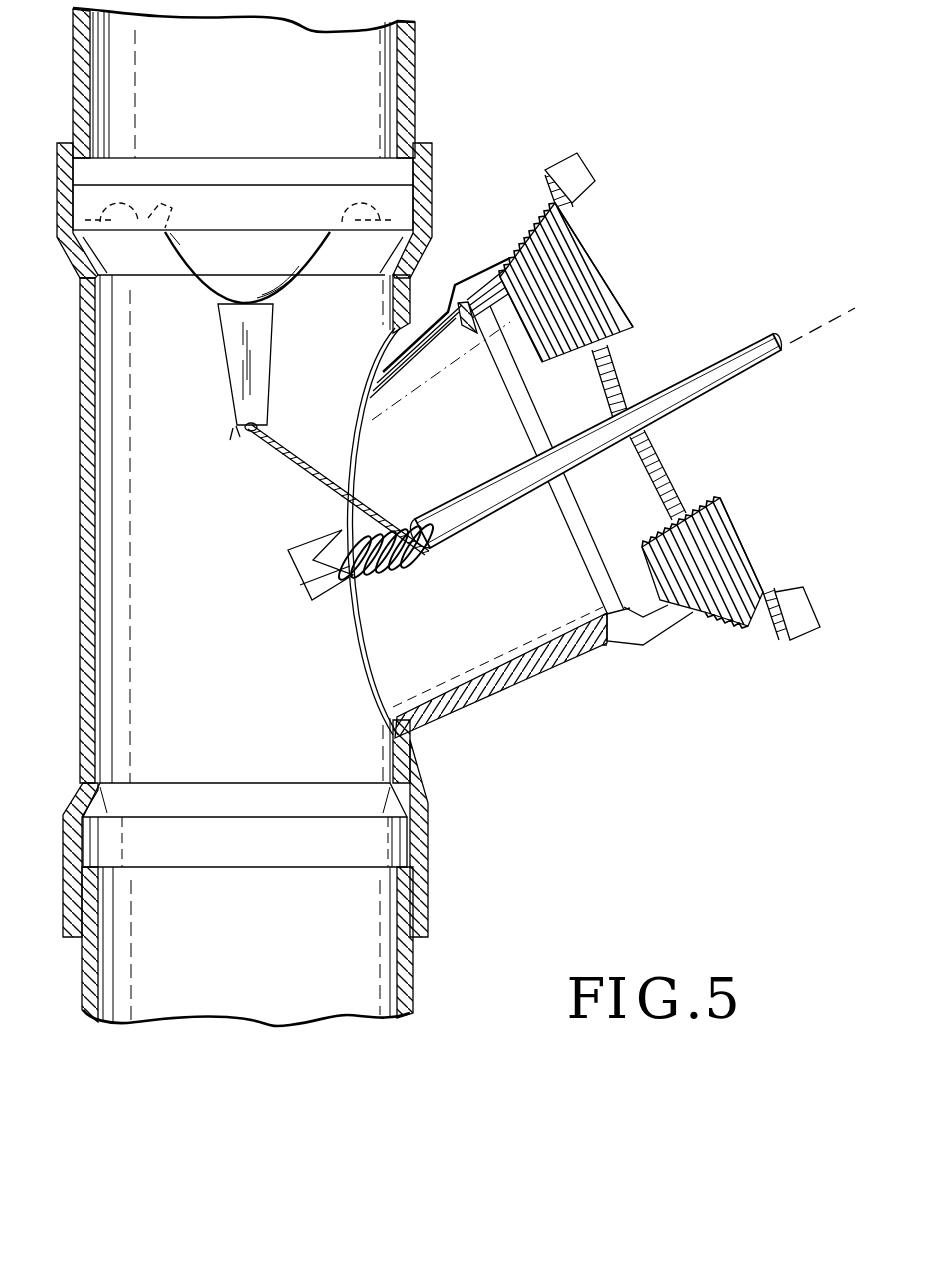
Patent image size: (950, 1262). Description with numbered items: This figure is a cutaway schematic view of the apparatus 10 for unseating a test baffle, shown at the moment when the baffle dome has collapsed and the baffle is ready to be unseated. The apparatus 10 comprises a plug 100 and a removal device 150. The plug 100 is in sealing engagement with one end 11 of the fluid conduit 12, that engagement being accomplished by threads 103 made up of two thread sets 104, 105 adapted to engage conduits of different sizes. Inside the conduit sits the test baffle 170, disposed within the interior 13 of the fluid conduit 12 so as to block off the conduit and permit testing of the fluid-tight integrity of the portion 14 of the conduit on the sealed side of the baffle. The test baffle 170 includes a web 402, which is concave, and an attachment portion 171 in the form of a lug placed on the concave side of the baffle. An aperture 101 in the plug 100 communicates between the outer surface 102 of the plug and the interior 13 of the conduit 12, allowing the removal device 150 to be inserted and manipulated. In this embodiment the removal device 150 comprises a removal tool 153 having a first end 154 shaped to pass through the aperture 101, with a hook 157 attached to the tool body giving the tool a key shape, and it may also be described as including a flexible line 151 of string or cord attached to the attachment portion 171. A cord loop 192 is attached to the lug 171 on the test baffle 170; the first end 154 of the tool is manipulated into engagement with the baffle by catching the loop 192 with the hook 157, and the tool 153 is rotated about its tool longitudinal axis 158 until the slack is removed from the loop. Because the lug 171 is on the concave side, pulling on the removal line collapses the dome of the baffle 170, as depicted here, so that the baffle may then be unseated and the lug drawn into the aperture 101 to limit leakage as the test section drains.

The apparatus 10 is at (557, 722).
The end of fluid conduit 11 is at (58, 203).
The fluid conduit 12 is at (80, 499).
The interior of fluid conduit 13 is at (202, 500).
The portion of the conduit 14 is at (332, 108).
The plug 100 is at (753, 531).
The aperture 101 is at (627, 407).
The outer surface of plug 102 is at (668, 471).
The threads 103 is at (712, 632).
The thread set 104 is at (513, 258).
The thread set 105 is at (543, 210).
The removal device 150 is at (723, 357).
The flexible line 151 is at (297, 453).
The removal tool 153 is at (517, 488).
The first end 154 is at (466, 520).
The hook 157 is at (323, 540).
The tool longitudinal axis 158 is at (823, 327).
The test baffle 170 is at (300, 282).
The attachment portion 171 is at (222, 348).
The loop 192 is at (350, 590).
The web 402 is at (207, 272).